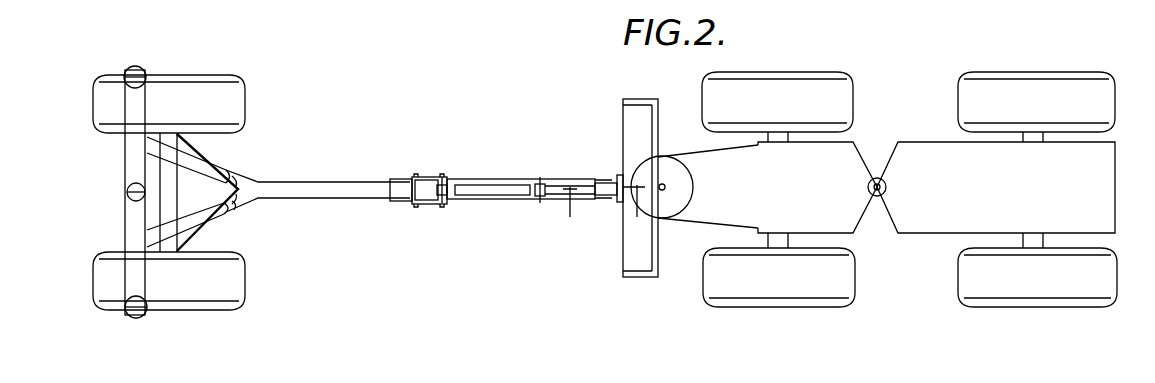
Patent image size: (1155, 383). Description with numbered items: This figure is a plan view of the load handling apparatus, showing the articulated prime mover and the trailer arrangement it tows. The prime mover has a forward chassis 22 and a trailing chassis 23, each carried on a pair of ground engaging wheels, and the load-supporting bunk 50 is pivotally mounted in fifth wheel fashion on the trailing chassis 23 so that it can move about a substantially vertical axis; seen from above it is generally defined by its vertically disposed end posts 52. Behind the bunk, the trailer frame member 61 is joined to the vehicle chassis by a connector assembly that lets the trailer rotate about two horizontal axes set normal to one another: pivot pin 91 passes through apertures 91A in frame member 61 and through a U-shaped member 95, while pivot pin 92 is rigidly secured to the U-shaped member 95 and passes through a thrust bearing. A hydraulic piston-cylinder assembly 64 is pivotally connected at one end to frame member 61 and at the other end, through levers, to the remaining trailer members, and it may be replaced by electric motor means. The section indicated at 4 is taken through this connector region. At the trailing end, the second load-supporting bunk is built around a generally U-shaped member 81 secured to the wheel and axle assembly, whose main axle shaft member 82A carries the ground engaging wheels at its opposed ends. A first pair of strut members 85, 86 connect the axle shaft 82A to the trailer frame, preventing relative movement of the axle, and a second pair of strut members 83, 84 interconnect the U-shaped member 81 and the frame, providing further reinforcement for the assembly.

The forward chassis 22 is at (962, 233).
The trailing chassis 23 is at (827, 233).
The load-supporting bunk 50 is at (648, 284).
The end posts 52 is at (712, 217).
The frame member 61 is at (545, 177).
The hydraulic piston-cylinder assembly 64 is at (492, 188).
The U-shaped member 81 is at (132, 155).
The main axle shaft member 82A is at (167, 213).
The strut member 83 is at (180, 158).
The strut member 84 is at (187, 238).
The strut member 85 is at (197, 227).
The strut member 86 is at (237, 177).
The pivot pin 91 is at (598, 200).
The apertures 91A is at (608, 180).
The pivot pin 92 is at (630, 185).
The U-shaped member 95 is at (613, 178).
The section line 4- 4 is at (603, 213).